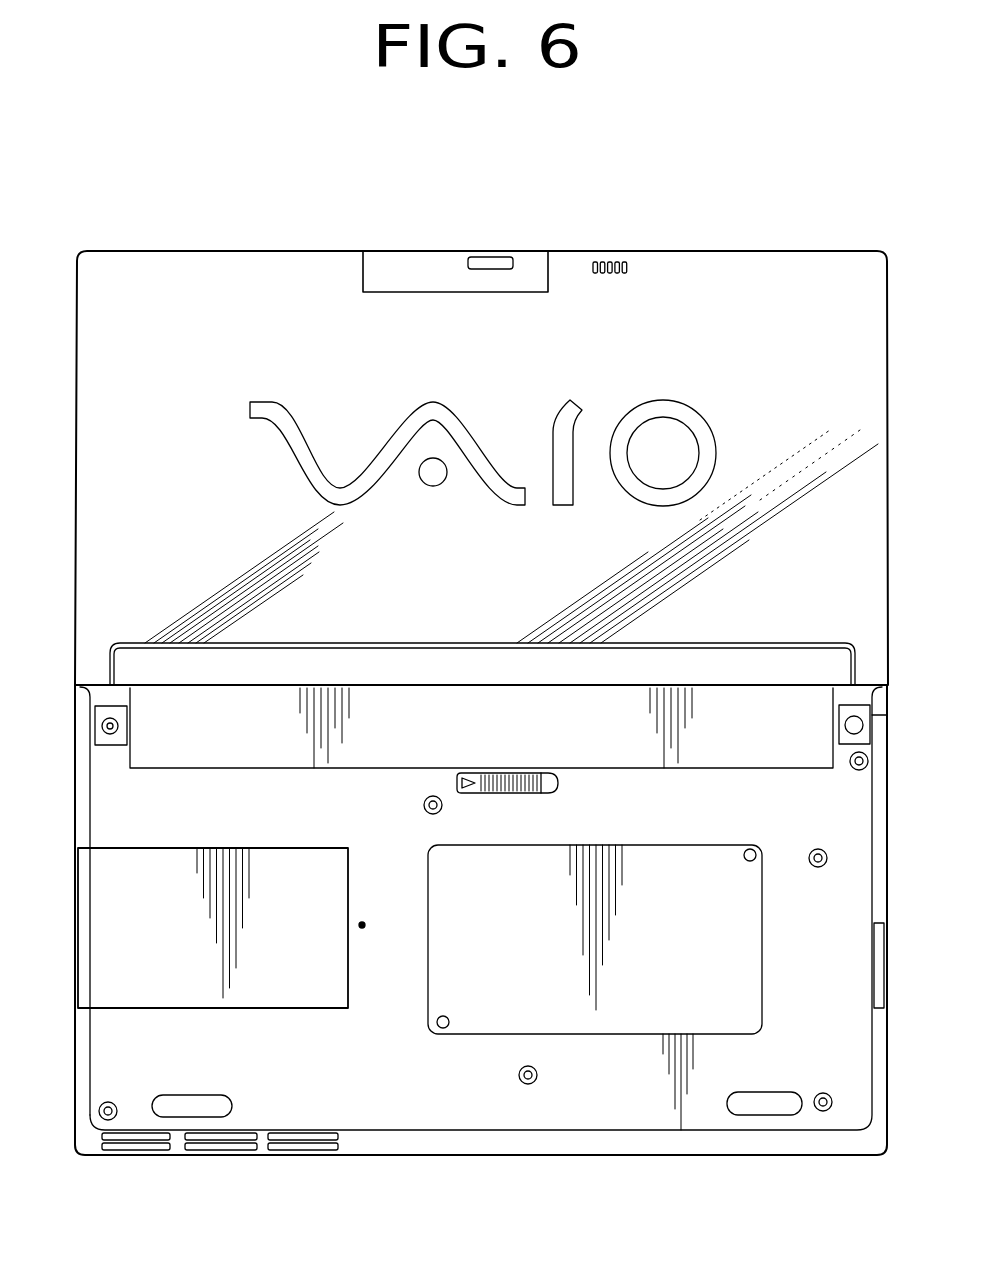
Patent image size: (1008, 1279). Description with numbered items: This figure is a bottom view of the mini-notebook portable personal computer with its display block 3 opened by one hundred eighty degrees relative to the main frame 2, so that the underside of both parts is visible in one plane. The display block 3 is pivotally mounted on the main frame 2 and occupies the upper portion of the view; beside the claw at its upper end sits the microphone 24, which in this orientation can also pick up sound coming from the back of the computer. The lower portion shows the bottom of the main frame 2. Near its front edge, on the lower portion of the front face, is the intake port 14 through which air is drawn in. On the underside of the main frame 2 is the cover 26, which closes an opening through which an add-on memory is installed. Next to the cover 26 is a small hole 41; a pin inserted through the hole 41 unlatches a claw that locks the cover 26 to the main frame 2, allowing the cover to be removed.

The main frame 2 is at (657, 1157).
The display block 3 is at (787, 250).
The intake port 14 is at (220, 1152).
The microphone 24 is at (604, 262).
The cover 26 is at (262, 1010).
The hole 41 is at (362, 928).